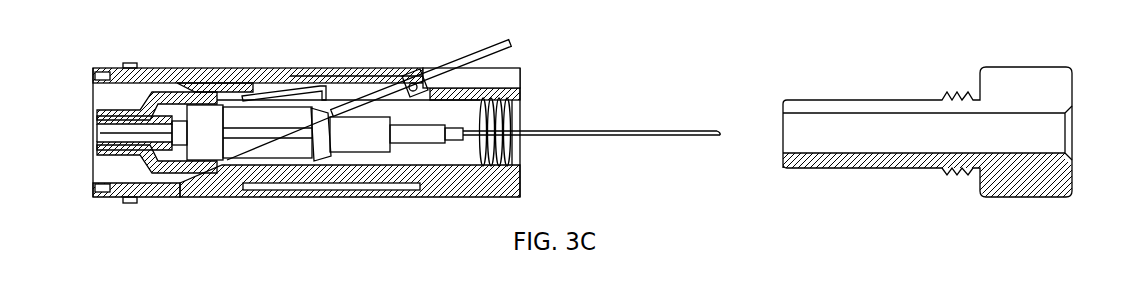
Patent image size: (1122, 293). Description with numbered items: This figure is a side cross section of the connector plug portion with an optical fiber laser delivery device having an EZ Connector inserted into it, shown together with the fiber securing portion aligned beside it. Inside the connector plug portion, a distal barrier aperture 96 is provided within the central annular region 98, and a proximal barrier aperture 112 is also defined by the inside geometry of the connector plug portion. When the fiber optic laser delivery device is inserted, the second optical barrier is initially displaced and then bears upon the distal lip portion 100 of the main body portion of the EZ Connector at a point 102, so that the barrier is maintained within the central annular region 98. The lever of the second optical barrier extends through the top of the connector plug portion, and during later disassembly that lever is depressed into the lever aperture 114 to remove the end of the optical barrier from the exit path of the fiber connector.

The distal barrier aperture 96 is at (370, 90).
The central annular region 98 is at (270, 122).
The distal lip portion 100 is at (208, 177).
The point 102 is at (293, 192).
The proximal barrier aperture 112 is at (258, 82).
The lever aperture 114 is at (497, 76).